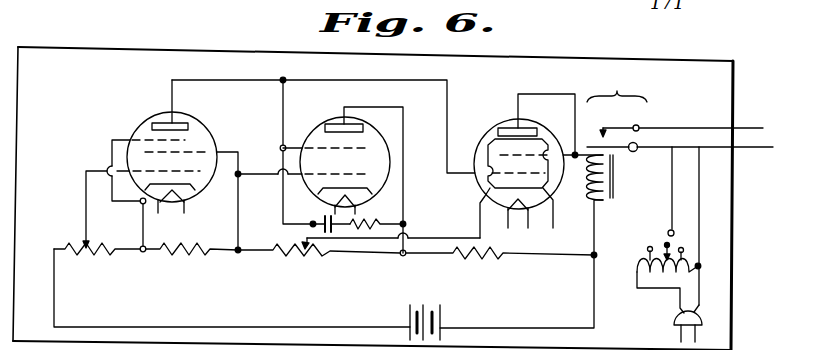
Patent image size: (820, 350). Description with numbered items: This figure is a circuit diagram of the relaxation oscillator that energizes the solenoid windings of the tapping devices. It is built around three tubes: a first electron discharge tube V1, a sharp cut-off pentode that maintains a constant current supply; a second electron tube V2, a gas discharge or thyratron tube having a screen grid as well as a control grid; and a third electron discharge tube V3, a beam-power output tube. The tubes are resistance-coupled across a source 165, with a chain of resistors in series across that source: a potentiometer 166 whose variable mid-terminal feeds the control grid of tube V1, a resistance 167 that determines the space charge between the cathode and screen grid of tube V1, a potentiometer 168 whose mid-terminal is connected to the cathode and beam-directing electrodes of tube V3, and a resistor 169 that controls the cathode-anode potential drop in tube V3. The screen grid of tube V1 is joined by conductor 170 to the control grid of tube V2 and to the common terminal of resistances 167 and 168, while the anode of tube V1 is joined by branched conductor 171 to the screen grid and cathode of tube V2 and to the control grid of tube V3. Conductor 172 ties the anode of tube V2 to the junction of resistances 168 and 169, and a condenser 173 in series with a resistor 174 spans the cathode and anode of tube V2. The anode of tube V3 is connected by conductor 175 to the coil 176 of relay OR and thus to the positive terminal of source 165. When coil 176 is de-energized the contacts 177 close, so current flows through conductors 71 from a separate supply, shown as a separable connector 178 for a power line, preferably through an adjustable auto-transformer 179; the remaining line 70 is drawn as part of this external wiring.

The conductor line 70 is at (732, 295).
The conductors 71 is at (717, 147).
The source 165 is at (433, 317).
The potentiometer 166 is at (97, 236).
The resistance 167 is at (192, 236).
The potentiometer 168 is at (319, 239).
The resistor 169 is at (500, 267).
The conductor 170 is at (252, 134).
The branched conductor 171 is at (298, 74).
The conductor 172 is at (402, 187).
The condenser 173 is at (330, 240).
The resistor 174 is at (372, 238).
The conductor 175 is at (547, 84).
The coil 176 is at (588, 198).
The contacts 177 is at (636, 151).
The separable connector 178 is at (676, 325).
The adjustable auto-transformer 179 is at (634, 266).
The first electron discharge tube V1 is at (150, 122).
The second electron tube V2 is at (323, 125).
The third electron discharge tube V3 is at (491, 124).